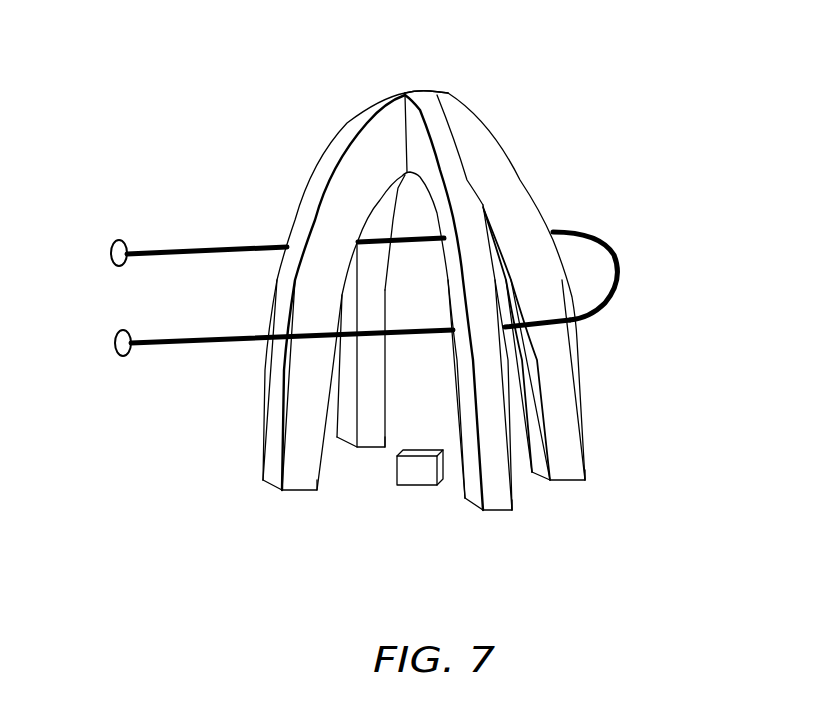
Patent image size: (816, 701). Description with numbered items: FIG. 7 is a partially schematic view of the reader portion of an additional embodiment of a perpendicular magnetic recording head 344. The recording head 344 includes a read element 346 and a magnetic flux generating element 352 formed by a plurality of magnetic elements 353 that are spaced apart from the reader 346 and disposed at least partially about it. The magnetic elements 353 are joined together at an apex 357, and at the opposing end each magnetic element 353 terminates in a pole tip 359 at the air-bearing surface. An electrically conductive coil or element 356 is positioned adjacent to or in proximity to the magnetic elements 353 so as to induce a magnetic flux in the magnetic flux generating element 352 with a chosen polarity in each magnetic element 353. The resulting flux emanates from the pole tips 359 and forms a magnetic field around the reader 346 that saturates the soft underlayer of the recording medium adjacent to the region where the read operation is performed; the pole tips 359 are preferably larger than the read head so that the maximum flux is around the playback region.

The perpendicular magnetic recording head 344 is at (424, 300).
The read element 346 is at (418, 487).
The magnetic flux generating element 352 is at (451, 91).
The magnetic elements 353 is at (262, 408).
The electrically conductive coil or element 356 is at (184, 243).
The apex 357 is at (413, 92).
The pole tip 359 is at (290, 494).